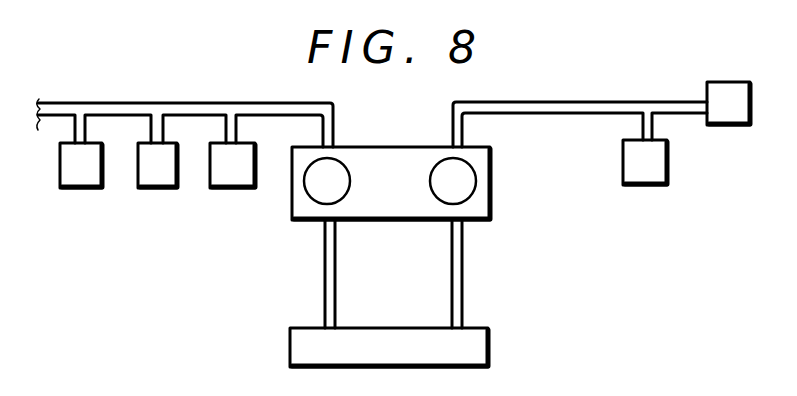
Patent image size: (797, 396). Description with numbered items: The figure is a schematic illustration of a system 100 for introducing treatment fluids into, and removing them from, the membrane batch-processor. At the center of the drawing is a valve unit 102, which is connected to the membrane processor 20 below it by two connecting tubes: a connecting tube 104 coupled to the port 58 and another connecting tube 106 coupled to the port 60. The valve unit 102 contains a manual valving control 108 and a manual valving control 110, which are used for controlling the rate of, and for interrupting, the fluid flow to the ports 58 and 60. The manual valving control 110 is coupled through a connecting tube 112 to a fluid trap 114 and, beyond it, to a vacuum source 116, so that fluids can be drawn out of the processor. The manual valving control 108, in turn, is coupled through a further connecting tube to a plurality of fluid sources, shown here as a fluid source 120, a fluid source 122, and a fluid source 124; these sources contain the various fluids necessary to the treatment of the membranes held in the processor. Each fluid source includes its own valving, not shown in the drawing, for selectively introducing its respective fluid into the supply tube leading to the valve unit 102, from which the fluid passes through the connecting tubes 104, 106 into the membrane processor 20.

The system 100 is at (527, 83).
The valve unit 102 is at (431, 183).
The connecting tube 104 is at (322, 270).
The connecting tube 106 is at (463, 260).
The manual valving control 108 is at (351, 176).
The manual valving control 110 is at (437, 195).
The connecting tube 112 is at (582, 100).
The fluid trap 114 is at (650, 186).
The vacuum source 116 is at (720, 82).
The fluid source 120 is at (223, 184).
The fluid source 122 is at (152, 184).
The fluid source 124 is at (72, 183).
The port 58 is at (340, 327).
The port 60 is at (452, 325).
The membrane processor 20 is at (489, 340).